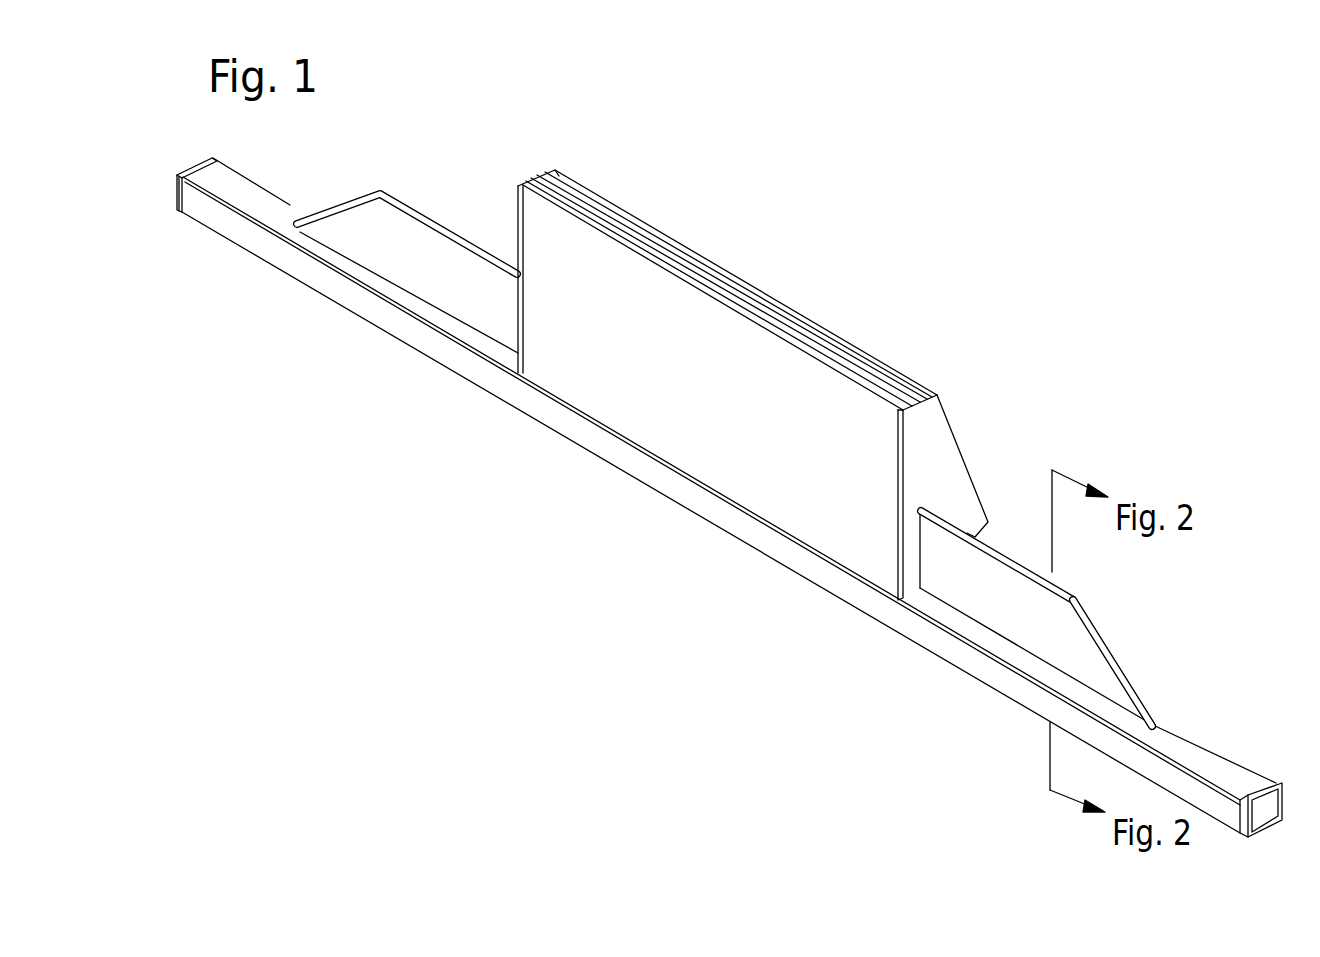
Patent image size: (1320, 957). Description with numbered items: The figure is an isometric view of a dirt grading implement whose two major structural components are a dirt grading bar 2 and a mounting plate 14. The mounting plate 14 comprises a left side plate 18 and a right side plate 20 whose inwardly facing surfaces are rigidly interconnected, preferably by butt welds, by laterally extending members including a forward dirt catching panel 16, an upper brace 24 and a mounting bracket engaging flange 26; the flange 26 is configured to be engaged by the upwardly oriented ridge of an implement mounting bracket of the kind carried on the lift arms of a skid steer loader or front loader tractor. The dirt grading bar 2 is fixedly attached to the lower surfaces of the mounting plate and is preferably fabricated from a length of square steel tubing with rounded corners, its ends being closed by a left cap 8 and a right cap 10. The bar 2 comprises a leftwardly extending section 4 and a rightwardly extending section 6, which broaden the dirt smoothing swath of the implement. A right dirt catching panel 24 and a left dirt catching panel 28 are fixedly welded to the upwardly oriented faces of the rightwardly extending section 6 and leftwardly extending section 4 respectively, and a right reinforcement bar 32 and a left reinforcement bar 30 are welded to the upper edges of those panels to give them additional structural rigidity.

The dirt grading bar 2 is at (729, 482).
The leftwardly extending section 4 is at (729, 488).
The rightwardly extending section 6 is at (352, 298).
The left cap 8 is at (1273, 782).
The right cap 10 is at (213, 158).
The mounting plate 14 is at (783, 382).
The forward dirt catching panel 16 is at (642, 383).
The left side plate 18 is at (940, 455).
The right side plate 20 is at (520, 347).
The upper brace 24 is at (486, 240).
The mounting bracket engaging flange 26 is at (660, 238).
The left dirt catching panel 28 is at (1100, 677).
The left reinforcement bar 30 is at (1013, 563).
The right reinforcement bar 32 is at (397, 203).